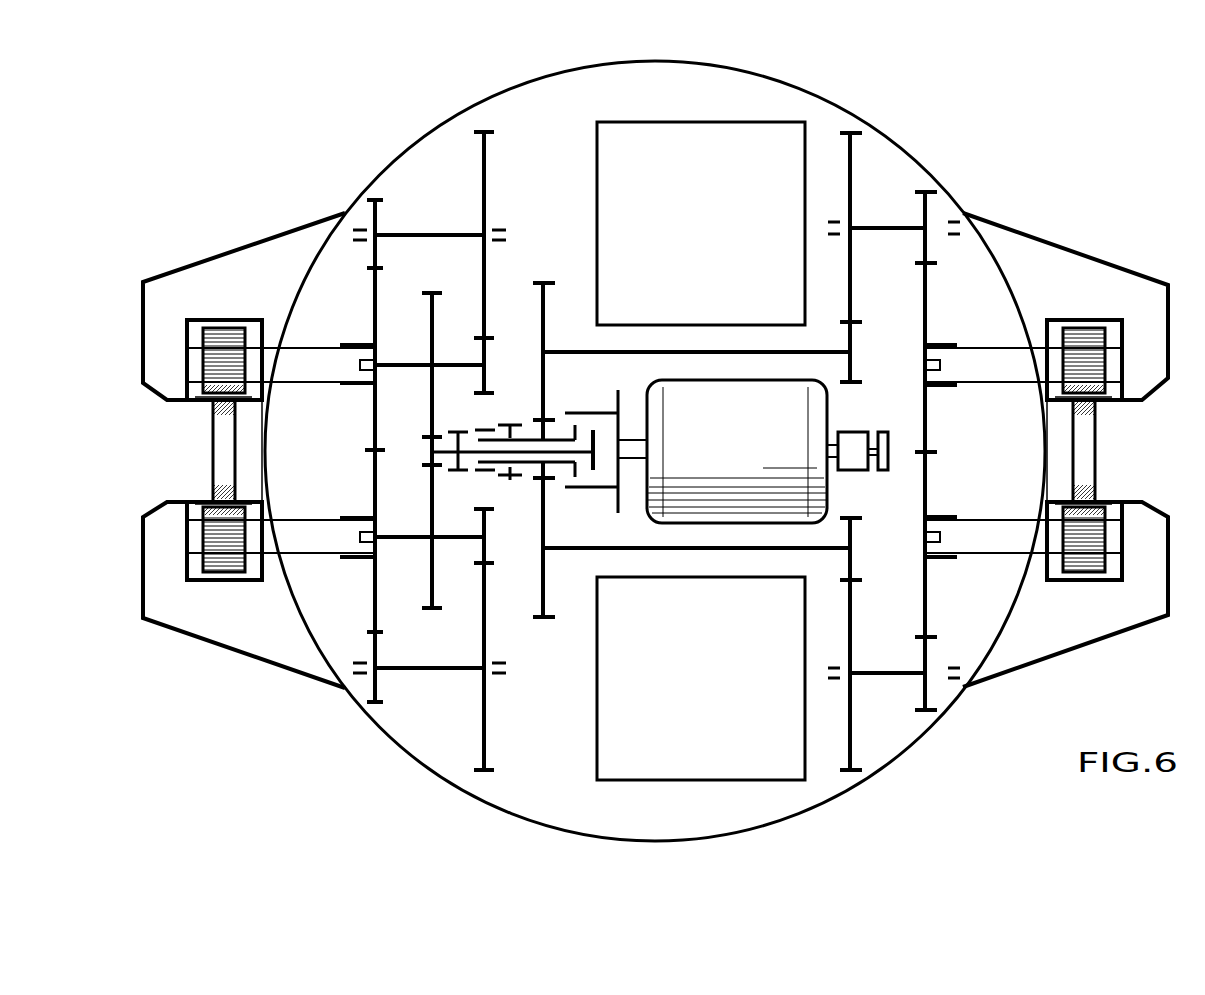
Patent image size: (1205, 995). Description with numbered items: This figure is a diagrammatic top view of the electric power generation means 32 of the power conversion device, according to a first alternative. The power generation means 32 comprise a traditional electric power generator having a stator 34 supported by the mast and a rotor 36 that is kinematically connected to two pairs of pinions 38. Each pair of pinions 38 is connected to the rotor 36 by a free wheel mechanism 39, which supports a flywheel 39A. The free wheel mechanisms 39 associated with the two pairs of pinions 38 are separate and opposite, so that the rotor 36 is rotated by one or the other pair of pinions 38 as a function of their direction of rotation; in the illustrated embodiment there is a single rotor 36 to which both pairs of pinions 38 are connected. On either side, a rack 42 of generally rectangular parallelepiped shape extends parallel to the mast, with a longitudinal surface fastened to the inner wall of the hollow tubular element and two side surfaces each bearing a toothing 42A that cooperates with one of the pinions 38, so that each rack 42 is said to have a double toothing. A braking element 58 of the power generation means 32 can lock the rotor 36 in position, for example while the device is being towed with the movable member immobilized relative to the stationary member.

The electric power generation means 32 is at (378, 120).
The stator 34 is at (582, 562).
The rotor 36 is at (519, 522).
The pinions 38 is at (227, 333).
The free wheel mechanism 39 is at (518, 400).
The flywheel 39A is at (577, 405).
The rack 42 is at (222, 452).
The toothing 42A is at (215, 406).
The braking element 58 is at (883, 418).